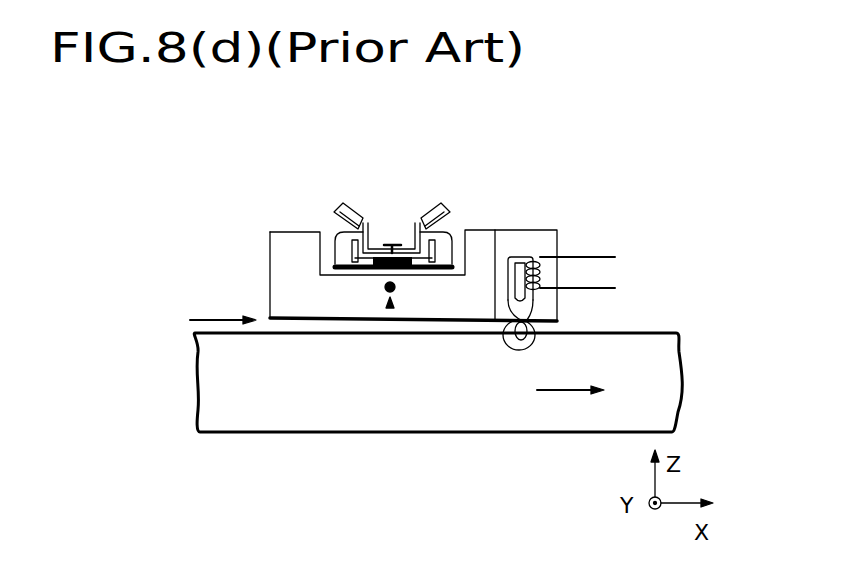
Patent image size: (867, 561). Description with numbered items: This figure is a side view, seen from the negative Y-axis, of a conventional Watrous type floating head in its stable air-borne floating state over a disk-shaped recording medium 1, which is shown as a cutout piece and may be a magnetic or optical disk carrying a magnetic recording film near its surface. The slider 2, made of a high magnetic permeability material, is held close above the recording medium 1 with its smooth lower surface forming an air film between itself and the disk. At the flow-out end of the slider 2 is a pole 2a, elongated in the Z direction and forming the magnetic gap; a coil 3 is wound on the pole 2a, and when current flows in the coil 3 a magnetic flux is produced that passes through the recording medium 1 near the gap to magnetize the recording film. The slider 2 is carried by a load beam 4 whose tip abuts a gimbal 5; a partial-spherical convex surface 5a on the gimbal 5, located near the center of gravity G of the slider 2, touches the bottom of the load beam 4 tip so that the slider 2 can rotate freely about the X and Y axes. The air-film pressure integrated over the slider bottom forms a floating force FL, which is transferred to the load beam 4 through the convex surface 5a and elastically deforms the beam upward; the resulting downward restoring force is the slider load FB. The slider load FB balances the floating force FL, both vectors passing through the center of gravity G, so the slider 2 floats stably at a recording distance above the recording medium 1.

The disk-shaped recording medium 1 is at (284, 421).
The slider 2 is at (290, 245).
The pole 2a is at (533, 307).
The coil 3 is at (548, 265).
The load beam 4 is at (413, 226).
The gimbal 5 is at (336, 253).
The convex surface 5a is at (392, 246).
The center of gravity G is at (385, 285).
The slider load FB is at (385, 246).
The floating force FL is at (390, 306).